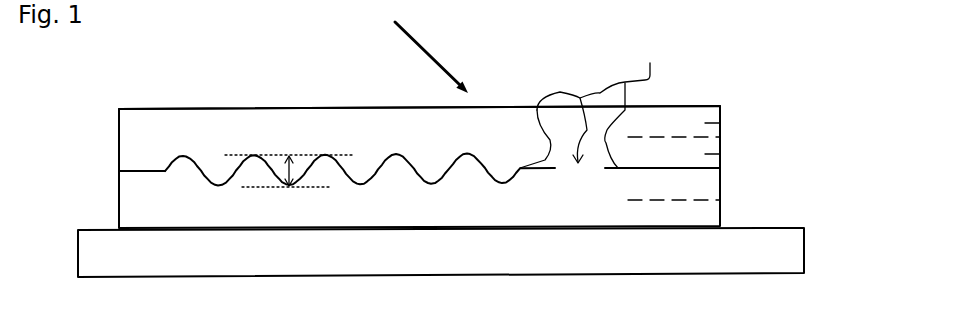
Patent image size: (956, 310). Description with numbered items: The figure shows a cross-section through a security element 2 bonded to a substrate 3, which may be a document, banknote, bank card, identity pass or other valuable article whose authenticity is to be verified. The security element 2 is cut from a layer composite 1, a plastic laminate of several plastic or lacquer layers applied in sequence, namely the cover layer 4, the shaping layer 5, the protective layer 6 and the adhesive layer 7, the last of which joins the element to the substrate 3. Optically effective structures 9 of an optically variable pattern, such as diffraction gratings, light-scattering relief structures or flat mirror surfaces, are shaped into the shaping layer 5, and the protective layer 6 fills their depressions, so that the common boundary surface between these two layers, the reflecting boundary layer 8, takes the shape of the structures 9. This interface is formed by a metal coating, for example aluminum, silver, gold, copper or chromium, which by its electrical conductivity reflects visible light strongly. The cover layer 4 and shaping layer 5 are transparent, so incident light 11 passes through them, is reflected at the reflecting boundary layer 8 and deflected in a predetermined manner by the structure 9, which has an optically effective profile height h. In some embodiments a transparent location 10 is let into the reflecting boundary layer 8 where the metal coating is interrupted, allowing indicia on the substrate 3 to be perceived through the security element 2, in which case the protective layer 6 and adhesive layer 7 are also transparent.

The layer composite 1 is at (117, 110).
The security element 2 is at (203, 96).
The substrate 3 is at (790, 259).
The cover layer 4 is at (720, 129).
The shaping layer 5 is at (708, 153).
The protective layer 6 is at (712, 187).
The adhesive layer 7 is at (712, 214).
The reflecting boundary layer 8 is at (591, 104).
The optically effective structure 9 is at (517, 150).
The transparent location 10 is at (592, 94).
The incident light 11 is at (432, 53).
The optically effective profile height h is at (305, 170).